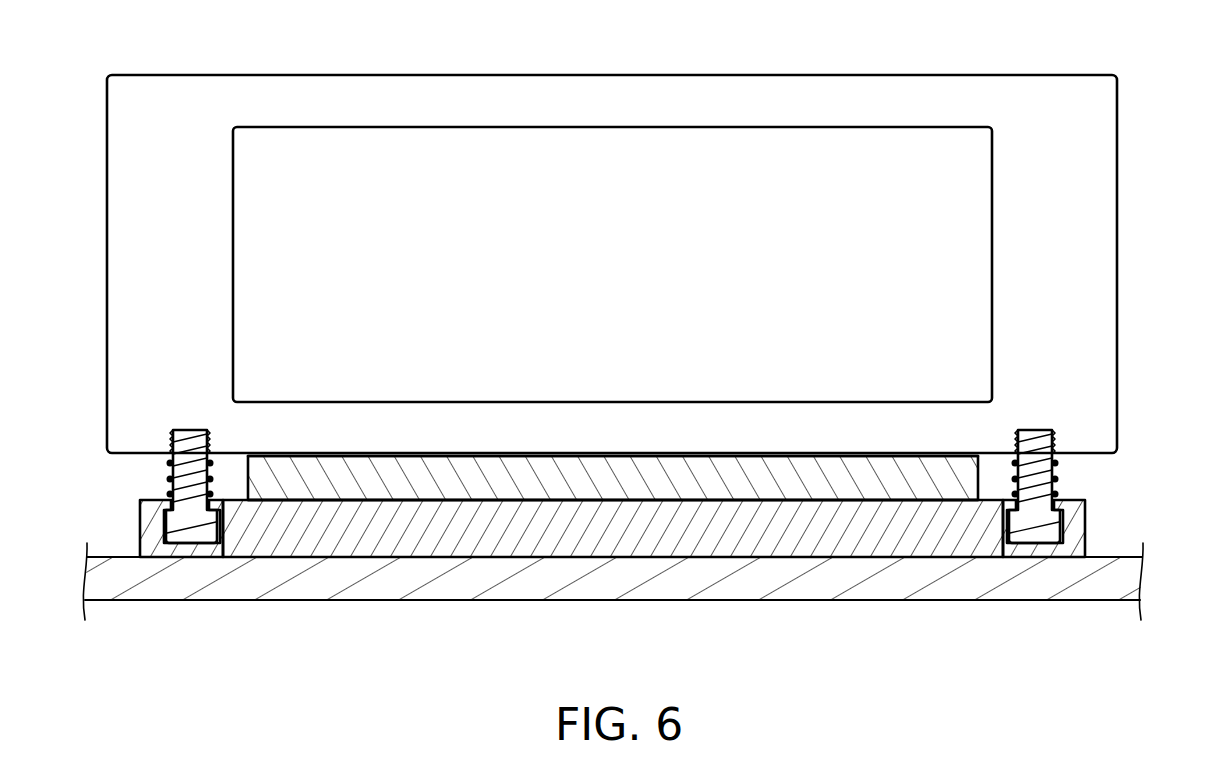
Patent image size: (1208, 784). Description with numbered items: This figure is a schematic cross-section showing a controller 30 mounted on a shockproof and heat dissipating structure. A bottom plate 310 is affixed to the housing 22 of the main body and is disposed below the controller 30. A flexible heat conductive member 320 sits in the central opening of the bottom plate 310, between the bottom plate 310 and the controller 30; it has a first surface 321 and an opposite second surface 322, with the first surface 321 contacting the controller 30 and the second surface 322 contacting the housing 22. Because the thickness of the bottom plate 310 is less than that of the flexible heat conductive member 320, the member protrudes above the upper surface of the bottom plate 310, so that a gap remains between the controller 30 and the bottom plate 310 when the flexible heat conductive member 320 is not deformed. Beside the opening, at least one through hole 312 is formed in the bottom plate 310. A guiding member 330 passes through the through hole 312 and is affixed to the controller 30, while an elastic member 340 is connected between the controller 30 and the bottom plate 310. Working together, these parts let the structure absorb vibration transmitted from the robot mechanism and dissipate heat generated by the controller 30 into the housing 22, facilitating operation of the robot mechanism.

The controller 30 is at (644, 103).
The flexible heat conductive member 320 is at (357, 483).
The first surface 321 is at (932, 455).
The second surface 322 is at (505, 503).
The bottom plate 310 is at (652, 535).
The through hole 312 is at (138, 517).
The guiding member 330 is at (190, 523).
The elastic member 340 is at (168, 487).
The housing 22 is at (890, 583).